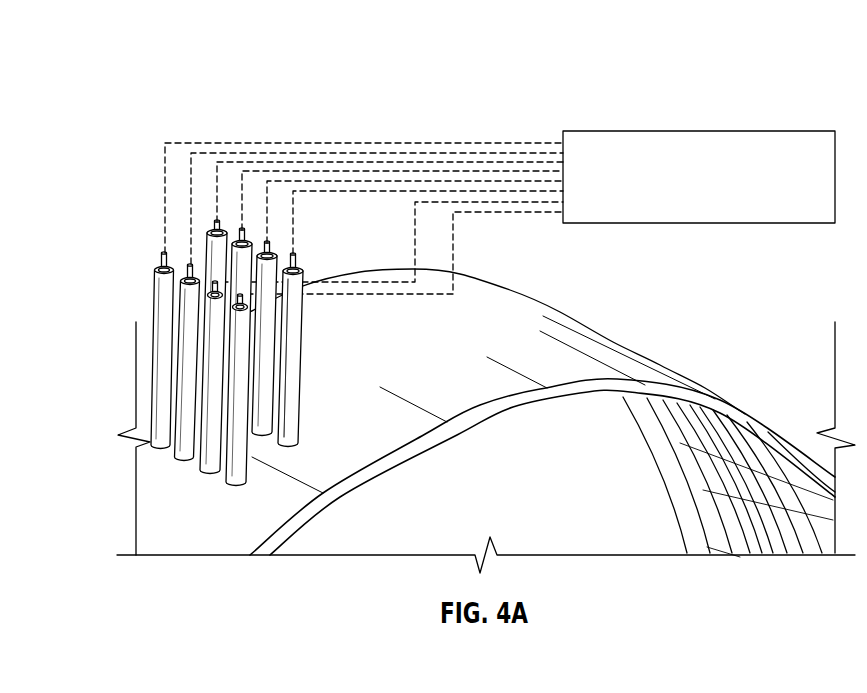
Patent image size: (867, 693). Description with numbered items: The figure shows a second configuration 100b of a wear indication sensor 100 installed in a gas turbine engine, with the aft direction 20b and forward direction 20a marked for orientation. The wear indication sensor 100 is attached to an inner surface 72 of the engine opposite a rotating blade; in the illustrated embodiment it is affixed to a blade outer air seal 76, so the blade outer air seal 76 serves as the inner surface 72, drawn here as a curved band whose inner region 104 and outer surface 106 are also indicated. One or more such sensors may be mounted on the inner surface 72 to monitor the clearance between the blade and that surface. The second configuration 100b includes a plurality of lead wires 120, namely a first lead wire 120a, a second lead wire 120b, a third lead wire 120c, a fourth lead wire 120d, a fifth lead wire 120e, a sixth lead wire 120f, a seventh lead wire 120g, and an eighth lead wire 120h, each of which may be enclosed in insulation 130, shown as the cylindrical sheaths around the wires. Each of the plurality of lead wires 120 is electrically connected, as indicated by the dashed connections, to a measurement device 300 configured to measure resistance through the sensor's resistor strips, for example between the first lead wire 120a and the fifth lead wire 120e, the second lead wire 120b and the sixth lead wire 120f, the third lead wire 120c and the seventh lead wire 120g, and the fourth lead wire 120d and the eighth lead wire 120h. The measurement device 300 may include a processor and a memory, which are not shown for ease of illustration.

The wear indication sensor 100 is at (115, 63).
The second configuration 100b is at (215, 88).
The forward direction 20a is at (497, 500).
The aft direction 20b is at (88, 165).
The inner surface 72 is at (787, 447).
The blade outer air seal 76 is at (644, 388).
The inner surface 104 is at (607, 453).
The outer surface 106 is at (465, 388).
The plurality of lead wires 120 is at (213, 304).
The first lead wire 120a is at (217, 220).
The second lead wire 120b is at (242, 228).
The third lead wire 120c is at (268, 247).
The fourth lead wire 120d is at (295, 262).
The fifth lead wire 120e is at (157, 263).
The sixth lead wire 120f is at (185, 270).
The seventh lead wire 120g is at (208, 289).
The eighth lead wire 120h is at (233, 307).
The insulation 130 is at (292, 377).
The measurement device 300 is at (699, 131).